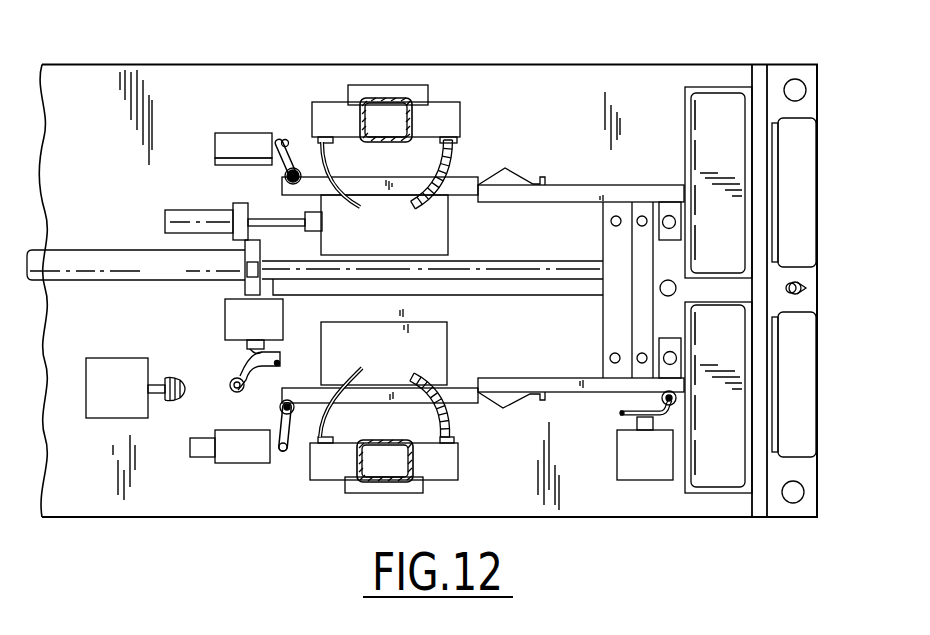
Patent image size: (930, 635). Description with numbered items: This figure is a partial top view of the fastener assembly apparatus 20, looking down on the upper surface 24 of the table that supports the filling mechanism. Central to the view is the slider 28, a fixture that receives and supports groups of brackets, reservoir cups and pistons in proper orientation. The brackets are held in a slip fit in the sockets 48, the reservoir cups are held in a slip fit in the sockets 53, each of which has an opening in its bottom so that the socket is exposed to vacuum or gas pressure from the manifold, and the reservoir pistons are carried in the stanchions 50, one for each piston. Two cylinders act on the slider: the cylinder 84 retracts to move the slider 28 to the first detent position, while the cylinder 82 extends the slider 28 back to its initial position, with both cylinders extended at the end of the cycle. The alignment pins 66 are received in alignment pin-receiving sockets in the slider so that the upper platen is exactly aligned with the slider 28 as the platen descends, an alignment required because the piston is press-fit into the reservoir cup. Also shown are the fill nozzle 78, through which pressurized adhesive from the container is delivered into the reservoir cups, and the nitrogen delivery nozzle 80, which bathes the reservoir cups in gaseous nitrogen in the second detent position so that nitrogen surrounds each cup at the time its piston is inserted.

The apparatus 20 is at (185, 93).
The upper surface 24 is at (61, 97).
The slider 28 is at (615, 286).
The socket 48 is at (677, 366).
The stanchion 50 is at (609, 358).
The socket 53 is at (638, 352).
The alignment pin 66 is at (806, 90).
The fill nozzle 78 is at (443, 417).
The nitrogen delivery nozzle 80 is at (337, 385).
The cylinder 82 is at (173, 210).
The cylinder 84 is at (77, 258).